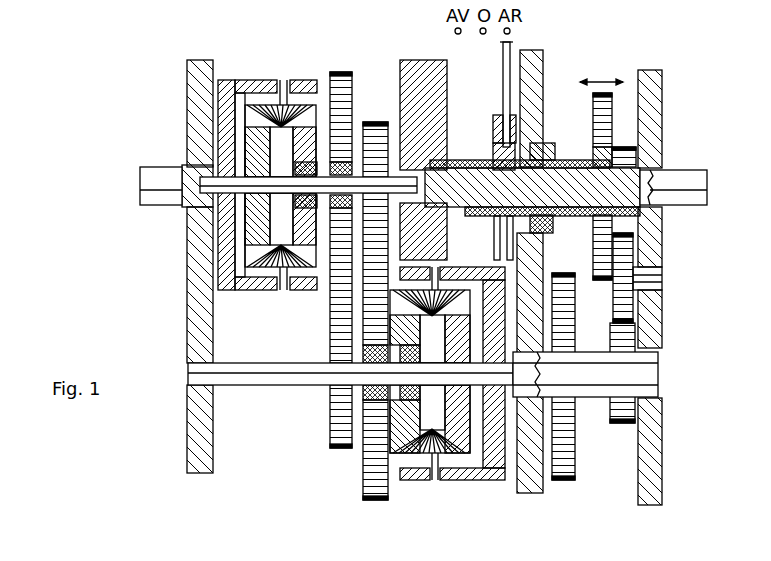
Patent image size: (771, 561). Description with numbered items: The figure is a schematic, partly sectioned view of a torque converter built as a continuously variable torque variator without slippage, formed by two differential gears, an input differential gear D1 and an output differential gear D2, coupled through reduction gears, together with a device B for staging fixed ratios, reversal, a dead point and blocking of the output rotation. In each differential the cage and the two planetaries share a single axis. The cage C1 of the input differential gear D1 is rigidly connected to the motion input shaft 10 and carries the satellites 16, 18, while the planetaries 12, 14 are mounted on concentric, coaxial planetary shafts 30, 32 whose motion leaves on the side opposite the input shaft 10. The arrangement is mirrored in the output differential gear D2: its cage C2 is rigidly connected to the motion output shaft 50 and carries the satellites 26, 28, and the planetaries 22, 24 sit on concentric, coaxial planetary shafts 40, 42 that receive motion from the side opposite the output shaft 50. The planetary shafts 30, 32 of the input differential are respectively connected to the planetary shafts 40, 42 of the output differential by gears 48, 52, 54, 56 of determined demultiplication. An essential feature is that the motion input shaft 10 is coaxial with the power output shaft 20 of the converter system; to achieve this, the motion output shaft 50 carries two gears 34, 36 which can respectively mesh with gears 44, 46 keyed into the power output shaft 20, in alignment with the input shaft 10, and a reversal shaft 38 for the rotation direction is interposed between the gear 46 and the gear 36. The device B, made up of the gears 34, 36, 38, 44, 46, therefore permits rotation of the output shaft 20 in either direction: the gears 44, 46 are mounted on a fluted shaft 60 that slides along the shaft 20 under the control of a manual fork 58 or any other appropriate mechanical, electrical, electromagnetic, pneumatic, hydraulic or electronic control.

The motion input shaft 10 is at (150, 183).
The planetary 12 is at (257, 137).
The planetary 14 is at (296, 104).
The satellite 16 is at (258, 102).
The satellite 18 is at (267, 262).
The power output shaft 20 is at (688, 192).
The planetary 22 is at (405, 448).
The planetary 24 is at (457, 328).
The satellite 26 is at (453, 294).
The satellite 28 is at (425, 442).
The planetary shaft 30 is at (198, 212).
The planetary shaft 32 is at (325, 117).
The gear 34 is at (570, 458).
The gear 36 is at (625, 412).
The reversal shaft 38 is at (625, 283).
The planetary shaft 40 is at (360, 378).
The planetary shaft 42 is at (372, 330).
The gear 44 is at (605, 117).
The gear 46 is at (622, 160).
The gear 48 is at (342, 288).
The motion output shaft 50 is at (647, 375).
The gear 52 is at (337, 420).
The gear 54 is at (378, 122).
The gear 56 is at (370, 462).
The fork 58 is at (502, 73).
The fluted shaft 60 is at (570, 166).
The device for staging fixed ratios, reversal, dead point and blocking B is at (614, 64).
The cage of the input differential gear C1 is at (220, 257).
The cage of the output differential gear C2 is at (482, 482).
The input differential gear D1 is at (236, 58).
The output differential gear D2 is at (460, 490).